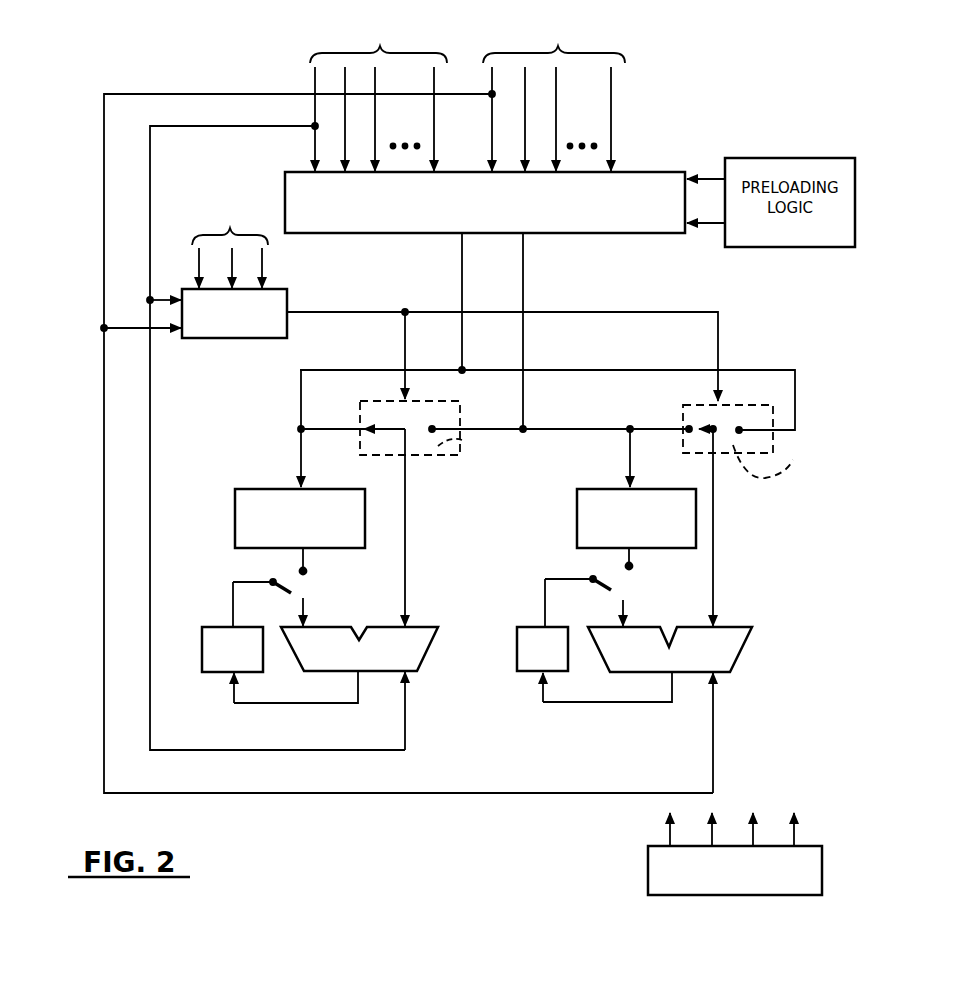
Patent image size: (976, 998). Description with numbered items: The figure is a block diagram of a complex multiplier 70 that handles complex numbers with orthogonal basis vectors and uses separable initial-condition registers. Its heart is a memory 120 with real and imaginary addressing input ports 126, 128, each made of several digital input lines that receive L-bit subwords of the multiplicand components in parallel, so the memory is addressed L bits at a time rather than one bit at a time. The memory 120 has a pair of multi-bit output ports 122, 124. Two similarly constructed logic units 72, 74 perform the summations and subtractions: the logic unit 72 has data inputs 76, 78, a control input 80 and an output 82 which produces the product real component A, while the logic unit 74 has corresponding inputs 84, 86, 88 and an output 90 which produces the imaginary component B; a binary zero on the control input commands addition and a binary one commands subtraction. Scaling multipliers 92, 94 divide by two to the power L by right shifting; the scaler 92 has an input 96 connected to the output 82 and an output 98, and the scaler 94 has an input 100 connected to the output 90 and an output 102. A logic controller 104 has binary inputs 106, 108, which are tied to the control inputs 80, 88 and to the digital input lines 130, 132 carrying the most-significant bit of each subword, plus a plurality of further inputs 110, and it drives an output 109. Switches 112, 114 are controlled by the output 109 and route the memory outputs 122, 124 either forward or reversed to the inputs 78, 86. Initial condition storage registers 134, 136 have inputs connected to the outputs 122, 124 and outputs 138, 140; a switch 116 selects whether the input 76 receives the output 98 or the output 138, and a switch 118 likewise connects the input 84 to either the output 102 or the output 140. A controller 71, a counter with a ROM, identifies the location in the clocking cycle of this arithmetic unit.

The complex multiplier 70 is at (88, 722).
The controller 71 is at (747, 883).
The logic unit 72 is at (423, 643).
The logic unit 74 is at (718, 657).
The data input 76 is at (306, 603).
The data input 78 is at (403, 565).
The control input 80 is at (406, 703).
The output 82 is at (358, 692).
The data input 84 is at (627, 608).
The data input 86 is at (715, 572).
The control input 88 is at (714, 708).
The output 90 is at (667, 700).
The scaling multiplier 92 is at (243, 661).
The scaling multiplier 94 is at (553, 663).
The input 96 is at (233, 700).
The output 98 is at (233, 606).
The input 100 is at (542, 697).
The output 102 is at (545, 613).
The logic controller 104 is at (205, 338).
The binary digital input 106 is at (165, 298).
The binary digital input 108 is at (160, 330).
The output 109 is at (365, 312).
The inputs 110 is at (230, 246).
The switch 112 is at (460, 448).
The switch 114 is at (668, 441).
The switch 116 is at (297, 596).
The switch 118 is at (617, 595).
The memory 120 is at (623, 235).
The output port 122 is at (463, 262).
The output port 124 is at (523, 262).
The real addressing input port 126 is at (378, 94).
The imaginary addressing input port 128 is at (554, 94).
The digital input line 130 is at (313, 78).
The digital input line 132 is at (492, 81).
The initial condition storage register 134 is at (258, 488).
The initial condition storage register 136 is at (593, 493).
The output 138 is at (300, 556).
The output 140 is at (625, 566).